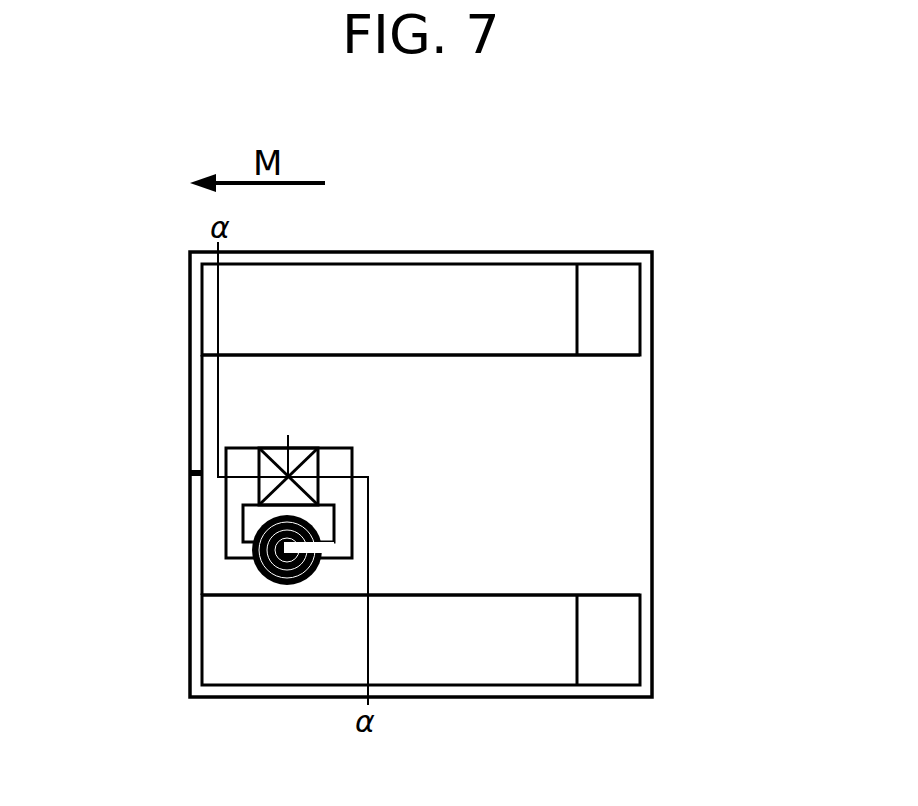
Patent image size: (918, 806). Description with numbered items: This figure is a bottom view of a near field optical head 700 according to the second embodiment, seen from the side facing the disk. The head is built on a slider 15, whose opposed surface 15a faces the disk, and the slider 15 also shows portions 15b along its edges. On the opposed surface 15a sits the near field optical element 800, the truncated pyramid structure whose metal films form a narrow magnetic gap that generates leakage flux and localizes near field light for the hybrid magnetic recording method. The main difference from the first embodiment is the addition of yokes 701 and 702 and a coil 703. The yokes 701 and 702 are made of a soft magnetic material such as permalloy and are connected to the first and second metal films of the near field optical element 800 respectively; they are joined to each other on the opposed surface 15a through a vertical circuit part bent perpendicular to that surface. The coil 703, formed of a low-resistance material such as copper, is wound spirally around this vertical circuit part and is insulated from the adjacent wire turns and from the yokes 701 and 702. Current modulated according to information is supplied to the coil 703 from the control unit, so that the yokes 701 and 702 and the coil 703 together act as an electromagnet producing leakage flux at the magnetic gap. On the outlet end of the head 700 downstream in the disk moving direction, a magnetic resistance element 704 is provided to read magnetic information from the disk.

The near field optical head 700 is at (662, 182).
The slider 15 is at (540, 477).
The opposed surface 15a is at (583, 557).
The rail portion 15b is at (443, 292).
The yoke 701 is at (339, 460).
The yoke 702 is at (237, 492).
The coil 703 is at (262, 572).
The magnetic resistance element 704 is at (190, 500).
The near field optical element 800 is at (277, 457).